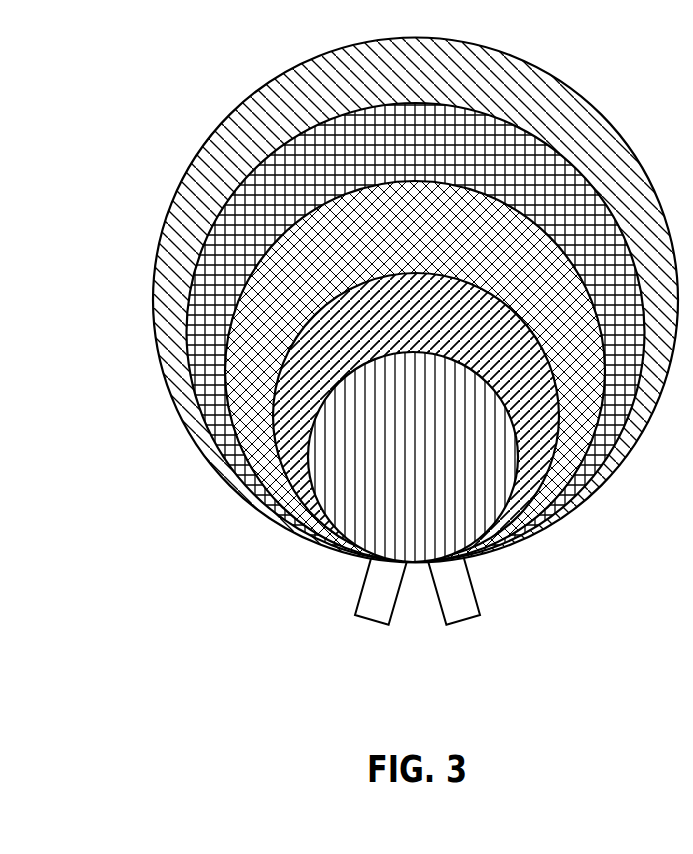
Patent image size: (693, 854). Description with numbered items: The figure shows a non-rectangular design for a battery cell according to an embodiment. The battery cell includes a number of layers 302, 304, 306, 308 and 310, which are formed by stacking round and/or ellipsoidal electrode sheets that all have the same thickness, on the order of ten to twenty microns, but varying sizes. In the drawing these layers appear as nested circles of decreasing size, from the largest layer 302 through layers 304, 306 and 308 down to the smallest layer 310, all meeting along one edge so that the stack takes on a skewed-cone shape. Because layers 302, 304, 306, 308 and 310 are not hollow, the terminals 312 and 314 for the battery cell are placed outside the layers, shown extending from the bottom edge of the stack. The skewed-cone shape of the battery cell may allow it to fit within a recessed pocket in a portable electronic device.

The layer 302 is at (205, 195).
The layer 304 is at (222, 296).
The layer 306 is at (262, 350).
The layer 308 is at (295, 462).
The layer 310 is at (365, 530).
The terminal 312 is at (382, 600).
The terminal 314 is at (463, 600).